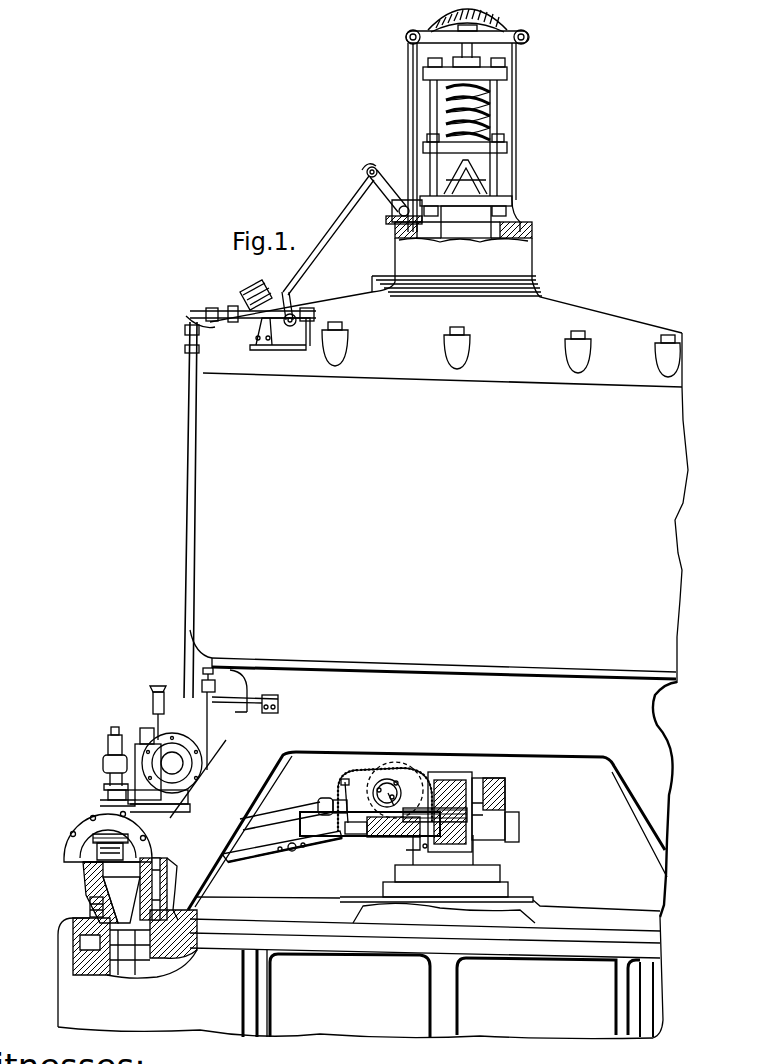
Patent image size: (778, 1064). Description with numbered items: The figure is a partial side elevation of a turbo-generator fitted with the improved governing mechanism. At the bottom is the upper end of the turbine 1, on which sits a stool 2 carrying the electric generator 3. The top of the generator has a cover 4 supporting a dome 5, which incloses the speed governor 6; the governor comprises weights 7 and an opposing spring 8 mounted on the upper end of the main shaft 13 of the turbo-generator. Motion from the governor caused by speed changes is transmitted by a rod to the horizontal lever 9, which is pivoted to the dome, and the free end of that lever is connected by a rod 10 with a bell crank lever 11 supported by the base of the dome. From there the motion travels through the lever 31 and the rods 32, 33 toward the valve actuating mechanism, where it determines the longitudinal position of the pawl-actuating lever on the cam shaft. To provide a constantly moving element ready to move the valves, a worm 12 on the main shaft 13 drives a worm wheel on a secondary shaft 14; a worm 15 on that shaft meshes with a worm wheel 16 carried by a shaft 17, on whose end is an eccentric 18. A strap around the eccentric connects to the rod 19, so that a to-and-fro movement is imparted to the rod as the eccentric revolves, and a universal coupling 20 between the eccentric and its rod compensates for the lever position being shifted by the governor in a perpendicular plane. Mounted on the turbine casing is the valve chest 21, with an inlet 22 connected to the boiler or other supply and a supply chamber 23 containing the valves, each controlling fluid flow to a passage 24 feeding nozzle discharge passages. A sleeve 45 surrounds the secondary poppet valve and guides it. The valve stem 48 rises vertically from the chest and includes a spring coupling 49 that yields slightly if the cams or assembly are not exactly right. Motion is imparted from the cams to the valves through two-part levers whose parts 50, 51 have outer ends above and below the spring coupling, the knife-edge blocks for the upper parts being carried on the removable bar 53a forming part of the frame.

The upper end of turbine 1 is at (360, 968).
The stool 2 is at (423, 799).
The electric generator 3 is at (439, 508).
The cover 4 is at (446, 307).
The dome 5 is at (500, 24).
The speed governor 6 is at (450, 137).
The weights 7 is at (465, 179).
The opposing spring 8 is at (490, 108).
The horizontal lever 9 is at (430, 36).
The rod 10 is at (408, 140).
The bell crank lever 11 is at (378, 208).
The worm 12 is at (492, 826).
The main shaft 13 is at (516, 860).
The secondary shaft 14 is at (430, 830).
The worm 15 is at (398, 845).
The worm wheel 16 is at (408, 770).
The shaft 17 is at (388, 790).
The eccentric 18 is at (372, 773).
The rod 19 is at (288, 814).
The universal coupling 20 is at (330, 800).
The valve chest 21 is at (84, 870).
The inlet 22 is at (95, 830).
The supply chamber 23 is at (150, 866).
The passage 24 is at (120, 887).
The lever 31 is at (300, 306).
The rod 32 is at (325, 232).
The rod 33 is at (185, 667).
The sleeve 45 is at (93, 848).
The valve stem 48 is at (108, 793).
The spring coupling 49 is at (103, 764).
The lever part 50 is at (128, 742).
The lever part 51 is at (110, 777).
The removable bar 53a is at (150, 728).